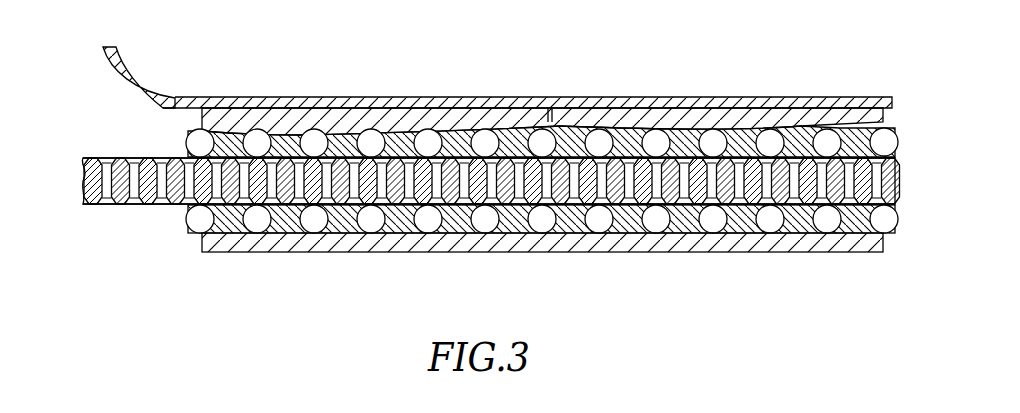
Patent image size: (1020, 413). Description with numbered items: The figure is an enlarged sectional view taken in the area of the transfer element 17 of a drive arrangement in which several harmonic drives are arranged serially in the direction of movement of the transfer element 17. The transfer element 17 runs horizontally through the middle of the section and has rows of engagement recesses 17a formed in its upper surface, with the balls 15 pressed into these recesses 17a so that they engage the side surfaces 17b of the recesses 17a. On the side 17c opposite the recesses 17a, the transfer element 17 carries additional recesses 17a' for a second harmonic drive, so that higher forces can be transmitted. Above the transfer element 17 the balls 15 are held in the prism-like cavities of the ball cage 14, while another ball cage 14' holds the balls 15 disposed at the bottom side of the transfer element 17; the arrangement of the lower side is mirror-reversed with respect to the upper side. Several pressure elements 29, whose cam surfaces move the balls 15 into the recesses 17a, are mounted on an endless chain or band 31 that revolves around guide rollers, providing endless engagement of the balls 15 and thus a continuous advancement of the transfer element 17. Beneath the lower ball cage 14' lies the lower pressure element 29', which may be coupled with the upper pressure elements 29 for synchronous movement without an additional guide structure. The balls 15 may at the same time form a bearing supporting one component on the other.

The endless chain or band 31 is at (117, 69).
The pressure element 29 is at (542, 93).
The lower pressure element 29' is at (542, 271).
The ball cage 14 is at (541, 105).
The lower ball cage 14' is at (541, 253).
The balls 15 is at (460, 131).
The transfer element 17 is at (486, 189).
The engagement recesses 17a is at (489, 137).
The additional recesses 17a' is at (489, 227).
The side surfaces 17b is at (168, 205).
The side 17c is at (105, 205).